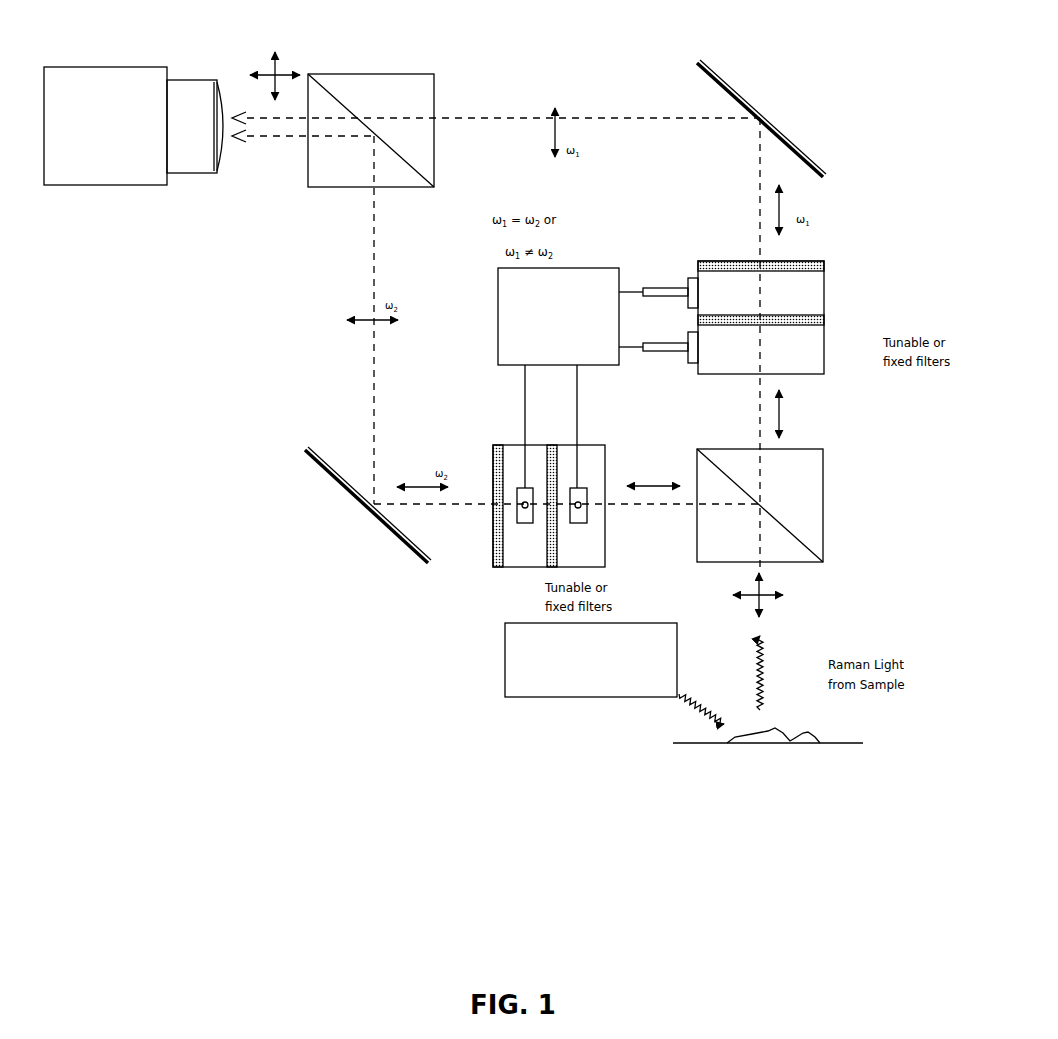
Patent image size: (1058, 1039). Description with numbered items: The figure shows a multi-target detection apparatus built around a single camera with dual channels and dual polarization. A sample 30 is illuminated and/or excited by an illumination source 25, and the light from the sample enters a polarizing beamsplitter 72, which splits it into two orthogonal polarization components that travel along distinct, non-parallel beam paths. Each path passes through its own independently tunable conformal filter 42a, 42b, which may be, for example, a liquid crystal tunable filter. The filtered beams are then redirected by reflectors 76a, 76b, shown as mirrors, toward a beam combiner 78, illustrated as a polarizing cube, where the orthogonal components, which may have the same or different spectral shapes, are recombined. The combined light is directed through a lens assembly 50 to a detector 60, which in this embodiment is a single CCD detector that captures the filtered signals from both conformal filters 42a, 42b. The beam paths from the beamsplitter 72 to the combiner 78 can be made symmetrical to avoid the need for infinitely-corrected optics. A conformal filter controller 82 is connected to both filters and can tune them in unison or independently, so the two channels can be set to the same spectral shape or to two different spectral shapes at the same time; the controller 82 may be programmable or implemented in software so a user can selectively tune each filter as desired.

The illumination source 25 is at (547, 692).
The sample 30 is at (780, 733).
The conformal filter 42a is at (852, 294).
The conformal filter 42b is at (514, 583).
The lens assembly 50 is at (222, 92).
The detector 60 is at (120, 172).
The polarizing beamsplitter 72 is at (821, 485).
The reflector 76a is at (743, 102).
The reflector 76b is at (333, 485).
The beam combiner 78 is at (402, 83).
The conformal filter controller 82 is at (497, 320).